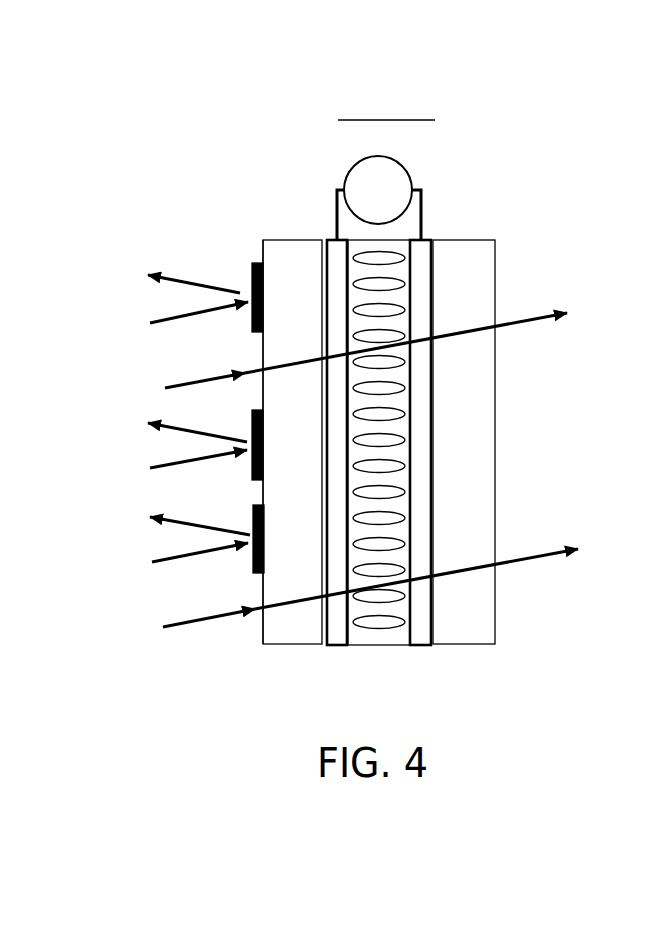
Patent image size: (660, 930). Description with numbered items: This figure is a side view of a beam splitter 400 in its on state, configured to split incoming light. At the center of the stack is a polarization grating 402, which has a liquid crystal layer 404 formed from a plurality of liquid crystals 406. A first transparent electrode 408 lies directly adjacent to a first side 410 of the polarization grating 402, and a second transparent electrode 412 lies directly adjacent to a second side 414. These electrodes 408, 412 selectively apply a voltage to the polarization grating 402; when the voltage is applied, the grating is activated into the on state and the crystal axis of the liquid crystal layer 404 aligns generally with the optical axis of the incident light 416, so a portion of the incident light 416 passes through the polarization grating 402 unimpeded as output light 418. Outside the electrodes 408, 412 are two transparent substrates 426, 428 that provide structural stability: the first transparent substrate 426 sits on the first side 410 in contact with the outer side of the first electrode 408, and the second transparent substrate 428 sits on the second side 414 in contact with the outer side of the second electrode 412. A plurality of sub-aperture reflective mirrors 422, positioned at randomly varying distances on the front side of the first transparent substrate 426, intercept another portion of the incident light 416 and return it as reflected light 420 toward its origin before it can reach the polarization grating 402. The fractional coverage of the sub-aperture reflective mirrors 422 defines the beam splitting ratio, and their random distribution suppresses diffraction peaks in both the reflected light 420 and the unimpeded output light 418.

The beam splitter 400 is at (138, 122).
The polarization grating 402 is at (410, 385).
The liquid crystal layer 404 is at (407, 428).
The liquid crystals 406 is at (405, 597).
The first transparent electrode 408 is at (330, 238).
The first side 410 is at (263, 348).
The second transparent electrode 412 is at (425, 238).
The second side 414 is at (412, 637).
The incident light 416 is at (153, 320).
The output light 418 is at (525, 316).
The reflected light 420 is at (200, 283).
The sub-aperture reflective mirrors 422 is at (256, 262).
The first transparent substrate 426 is at (290, 238).
The second transparent substrate 428 is at (475, 238).